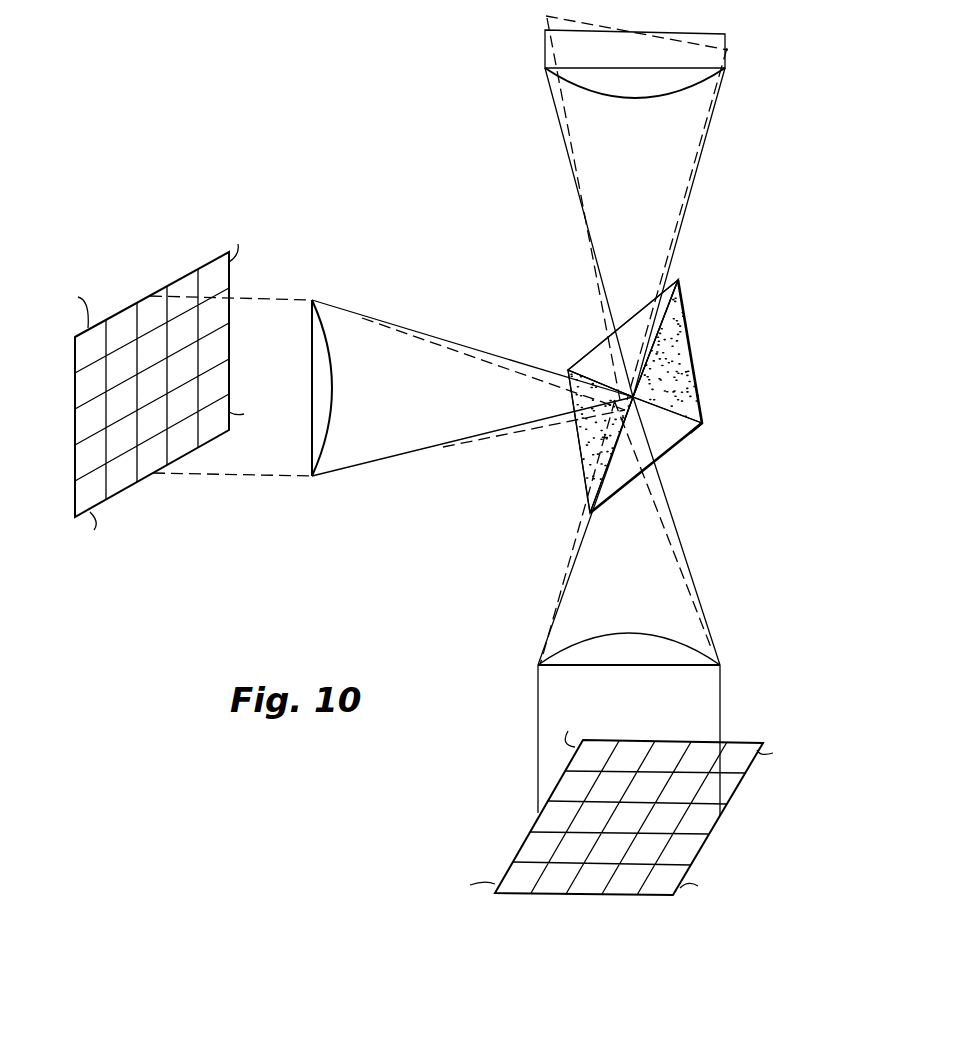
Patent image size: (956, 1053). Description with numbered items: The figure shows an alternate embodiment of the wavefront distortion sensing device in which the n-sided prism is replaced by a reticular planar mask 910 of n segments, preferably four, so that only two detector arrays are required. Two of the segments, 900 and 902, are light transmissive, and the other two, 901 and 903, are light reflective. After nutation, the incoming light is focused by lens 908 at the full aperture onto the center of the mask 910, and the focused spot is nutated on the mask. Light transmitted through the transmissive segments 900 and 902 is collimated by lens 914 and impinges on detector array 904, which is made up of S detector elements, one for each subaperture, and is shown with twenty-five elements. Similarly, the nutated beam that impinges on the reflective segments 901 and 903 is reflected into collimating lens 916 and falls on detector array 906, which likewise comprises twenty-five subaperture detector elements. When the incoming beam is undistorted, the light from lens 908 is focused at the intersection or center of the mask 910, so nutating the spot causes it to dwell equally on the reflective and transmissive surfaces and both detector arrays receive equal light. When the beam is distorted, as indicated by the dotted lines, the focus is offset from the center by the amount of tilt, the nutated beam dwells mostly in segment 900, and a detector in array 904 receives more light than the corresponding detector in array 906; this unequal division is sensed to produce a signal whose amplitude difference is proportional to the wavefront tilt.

The light transmissive mask segment 900 is at (660, 452).
The light reflective mask segment 901 is at (578, 458).
The light transmissive mask segment 902 is at (678, 282).
The light reflective mask segment 903 is at (692, 372).
The detector array 904 is at (592, 897).
The detector array 906 is at (158, 473).
The lens 908 is at (690, 68).
The planar mask 910 is at (694, 438).
The collimating lens 914 is at (700, 652).
The collimating lens 916 is at (328, 322).